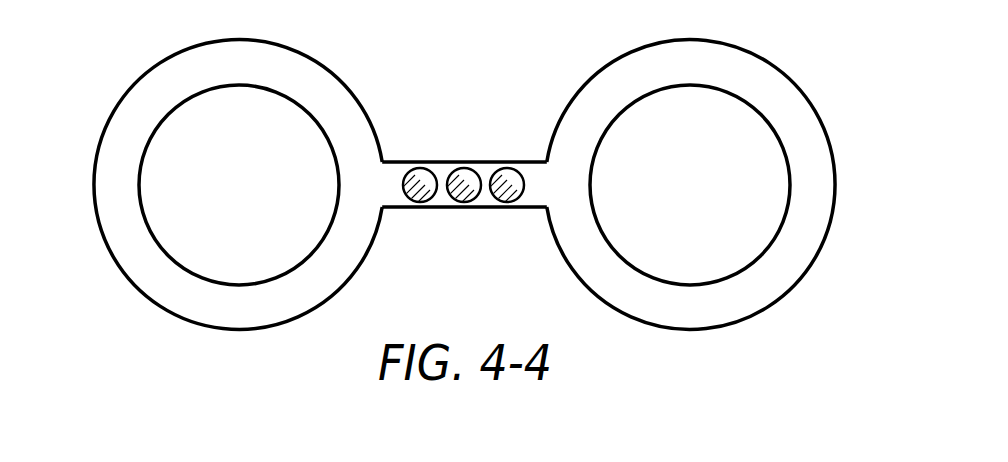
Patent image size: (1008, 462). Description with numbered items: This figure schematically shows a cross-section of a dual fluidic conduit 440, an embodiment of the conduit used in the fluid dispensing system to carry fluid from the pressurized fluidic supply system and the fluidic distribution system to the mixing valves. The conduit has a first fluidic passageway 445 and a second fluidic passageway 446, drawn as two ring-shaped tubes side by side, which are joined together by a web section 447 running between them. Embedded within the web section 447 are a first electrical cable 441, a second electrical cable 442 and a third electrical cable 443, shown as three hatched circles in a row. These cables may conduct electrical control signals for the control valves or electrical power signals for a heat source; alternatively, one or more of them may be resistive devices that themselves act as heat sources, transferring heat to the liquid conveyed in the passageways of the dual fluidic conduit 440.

The dual fluidic conduit 440 is at (366, 91).
The first electrical cable 441 is at (421, 188).
The second electrical cable 442 is at (465, 190).
The third electrical cable 443 is at (507, 188).
The first fluidic passageway 445 is at (203, 215).
The second fluidic passageway 446 is at (720, 130).
The web section 447 is at (443, 162).